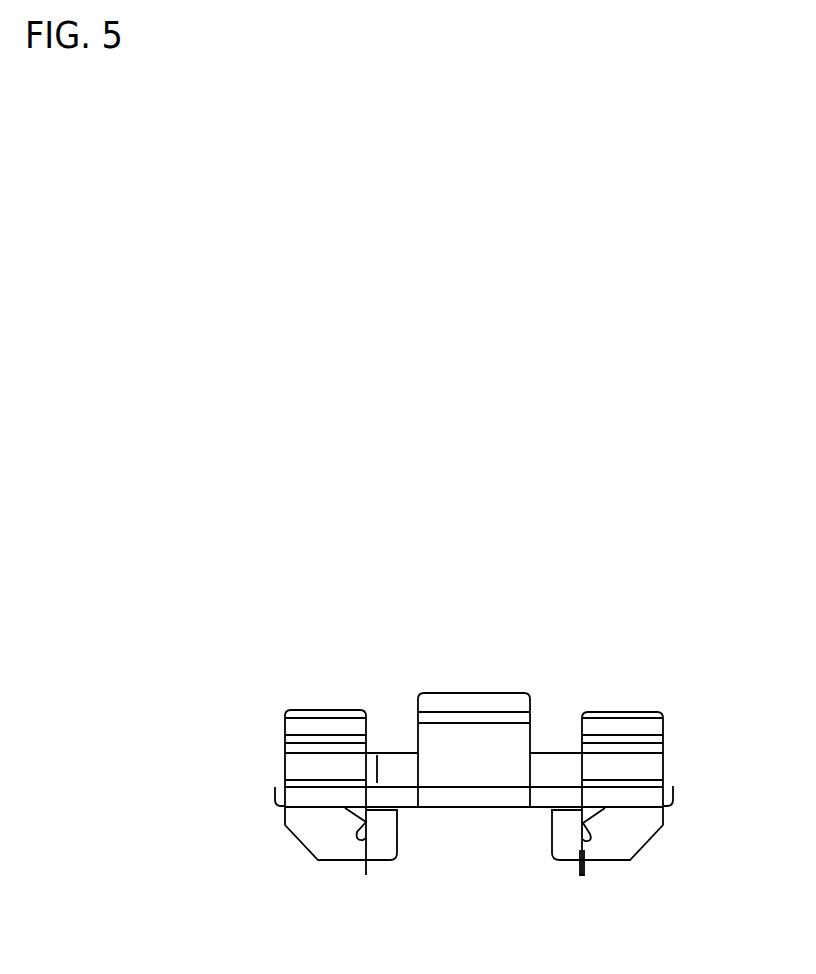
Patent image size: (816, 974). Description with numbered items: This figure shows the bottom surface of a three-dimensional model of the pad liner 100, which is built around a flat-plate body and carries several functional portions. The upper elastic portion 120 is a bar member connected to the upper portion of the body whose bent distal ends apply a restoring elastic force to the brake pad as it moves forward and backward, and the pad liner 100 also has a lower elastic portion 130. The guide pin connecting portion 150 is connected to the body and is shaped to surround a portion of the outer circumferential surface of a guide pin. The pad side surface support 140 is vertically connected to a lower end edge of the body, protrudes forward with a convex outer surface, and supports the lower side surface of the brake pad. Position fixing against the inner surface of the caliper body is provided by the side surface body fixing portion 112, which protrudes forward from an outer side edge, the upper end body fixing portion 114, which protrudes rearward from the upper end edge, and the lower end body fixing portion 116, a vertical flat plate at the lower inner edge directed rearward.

The pad liner 100 is at (507, 783).
The side surface body fixing portion 112 is at (677, 800).
The upper end body fixing portion 114 is at (618, 853).
The lower end body fixing portion 116 is at (582, 875).
The upper elastic portion 120 is at (575, 765).
The lower elastic portion 130 is at (605, 810).
The pad side surface support 140 is at (658, 741).
The guide pin connecting portion 150 is at (482, 737).